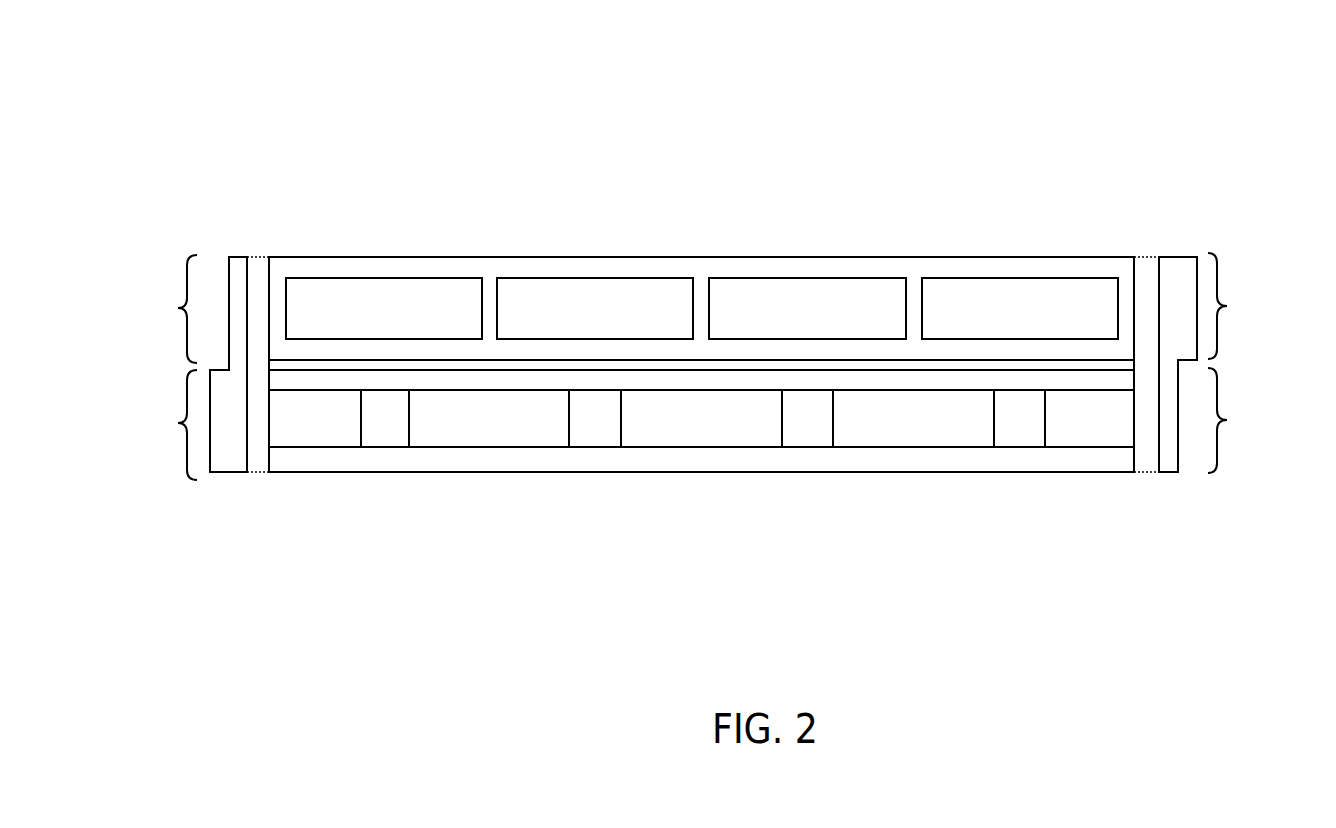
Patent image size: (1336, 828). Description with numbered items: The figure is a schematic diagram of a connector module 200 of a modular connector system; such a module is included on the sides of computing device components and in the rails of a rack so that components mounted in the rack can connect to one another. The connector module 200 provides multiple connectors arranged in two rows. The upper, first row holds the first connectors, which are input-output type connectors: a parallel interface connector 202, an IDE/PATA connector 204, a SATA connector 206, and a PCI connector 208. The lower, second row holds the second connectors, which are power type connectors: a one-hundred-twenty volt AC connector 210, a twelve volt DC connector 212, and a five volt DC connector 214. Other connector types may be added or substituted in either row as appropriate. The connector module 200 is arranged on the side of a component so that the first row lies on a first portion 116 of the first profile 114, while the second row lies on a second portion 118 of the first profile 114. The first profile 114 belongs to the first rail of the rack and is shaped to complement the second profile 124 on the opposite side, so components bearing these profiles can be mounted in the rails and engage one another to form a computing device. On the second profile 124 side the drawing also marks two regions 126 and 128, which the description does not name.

The connector module 200 is at (668, 154).
The first profile 114 is at (244, 287).
The first portion 116 is at (179, 308).
The second portion 118 is at (180, 423).
The second profile 124 is at (1182, 272).
The second upper region 126 is at (1224, 305).
The second lower region 128 is at (1224, 422).
The parallel interface connector 202 is at (384, 308).
The IDE/PATA connector 204 is at (595, 308).
The SATA connector 206 is at (807, 308).
The PCI connector 208 is at (1020, 308).
The 120VAC connector 210 is at (489, 418).
The 12VDC connector 212 is at (701, 418).
The 5VDC connector 214 is at (913, 418).